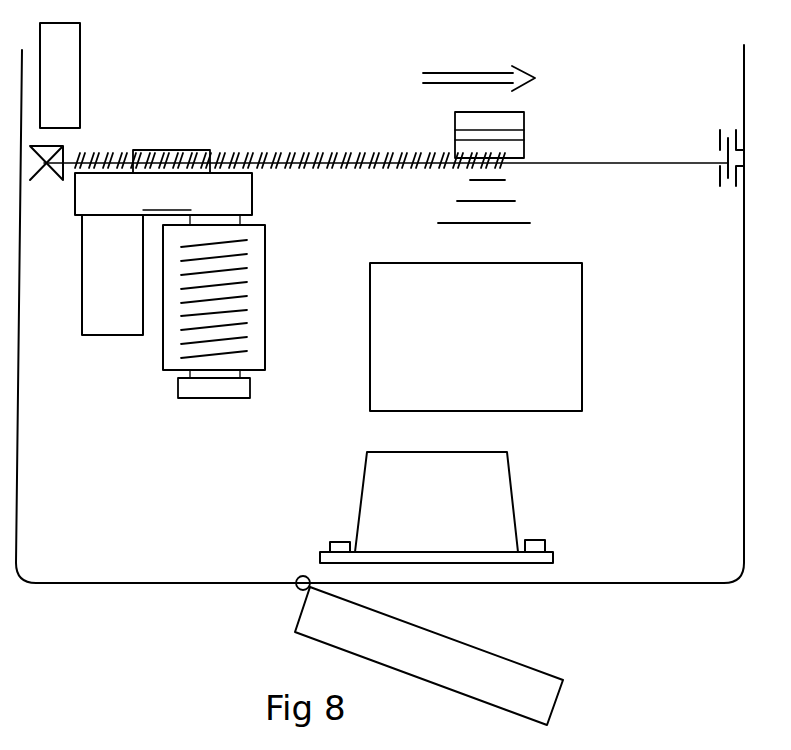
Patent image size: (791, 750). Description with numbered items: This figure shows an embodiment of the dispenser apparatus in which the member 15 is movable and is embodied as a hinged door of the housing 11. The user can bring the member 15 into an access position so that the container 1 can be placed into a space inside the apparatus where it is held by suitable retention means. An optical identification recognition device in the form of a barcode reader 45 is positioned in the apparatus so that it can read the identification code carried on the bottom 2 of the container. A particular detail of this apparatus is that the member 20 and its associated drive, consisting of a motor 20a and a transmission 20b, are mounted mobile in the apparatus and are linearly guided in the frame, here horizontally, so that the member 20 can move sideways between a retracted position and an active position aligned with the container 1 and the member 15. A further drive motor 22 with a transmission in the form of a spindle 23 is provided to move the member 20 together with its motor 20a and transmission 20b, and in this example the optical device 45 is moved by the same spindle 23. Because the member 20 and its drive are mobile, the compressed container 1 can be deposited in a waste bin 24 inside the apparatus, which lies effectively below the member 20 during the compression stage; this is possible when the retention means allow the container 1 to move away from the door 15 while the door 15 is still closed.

The container 1 is at (541, 490).
The bottom 2 is at (410, 452).
The housing 11 is at (720, 582).
The member 15 is at (483, 648).
The member 20 is at (222, 393).
The motor 20a is at (95, 328).
The transmission 20b is at (163, 182).
The drive motor 22 is at (78, 92).
The spindle 23 is at (240, 151).
The waste bin 24 is at (582, 380).
The barcode reader 45 is at (520, 122).